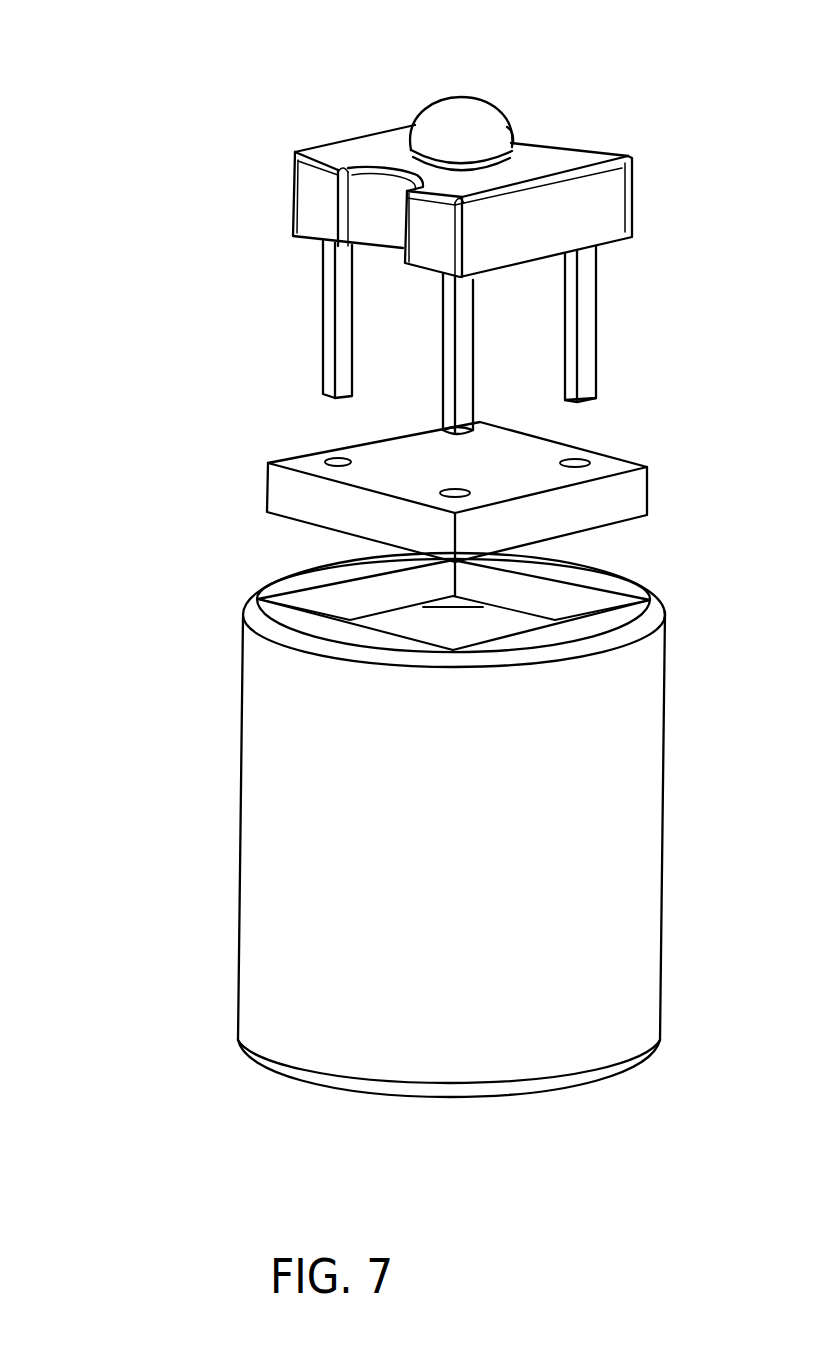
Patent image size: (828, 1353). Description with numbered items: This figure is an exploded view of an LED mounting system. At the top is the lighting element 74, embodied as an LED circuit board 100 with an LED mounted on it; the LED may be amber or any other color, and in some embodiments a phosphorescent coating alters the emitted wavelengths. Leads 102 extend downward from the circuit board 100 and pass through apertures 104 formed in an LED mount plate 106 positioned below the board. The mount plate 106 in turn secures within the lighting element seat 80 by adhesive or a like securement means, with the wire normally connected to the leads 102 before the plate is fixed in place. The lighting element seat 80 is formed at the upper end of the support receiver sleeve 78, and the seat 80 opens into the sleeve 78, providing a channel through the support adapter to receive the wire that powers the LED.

The lighting element 74 is at (389, 217).
The support receiver sleeve 78 is at (386, 819).
The lighting element seat 80 is at (335, 598).
The LED circuit board 100 is at (323, 197).
The leads 102 is at (467, 353).
The apertures 104 is at (455, 494).
The LED mount plate 106 is at (363, 494).